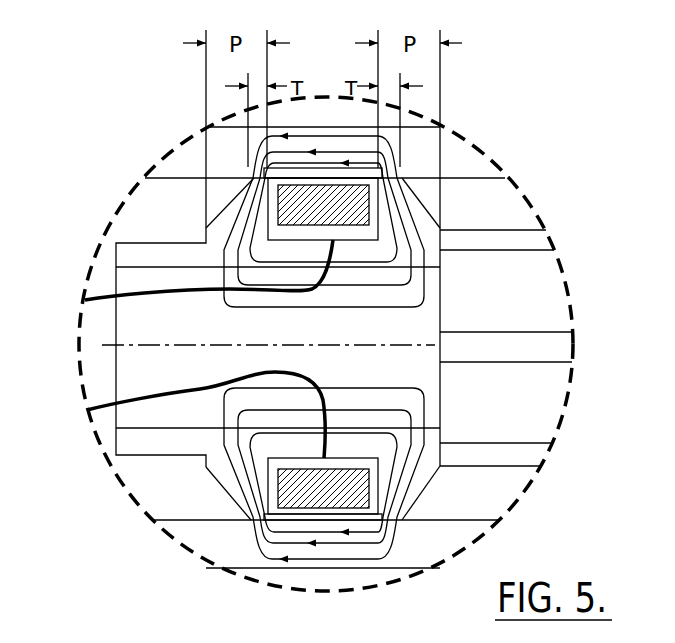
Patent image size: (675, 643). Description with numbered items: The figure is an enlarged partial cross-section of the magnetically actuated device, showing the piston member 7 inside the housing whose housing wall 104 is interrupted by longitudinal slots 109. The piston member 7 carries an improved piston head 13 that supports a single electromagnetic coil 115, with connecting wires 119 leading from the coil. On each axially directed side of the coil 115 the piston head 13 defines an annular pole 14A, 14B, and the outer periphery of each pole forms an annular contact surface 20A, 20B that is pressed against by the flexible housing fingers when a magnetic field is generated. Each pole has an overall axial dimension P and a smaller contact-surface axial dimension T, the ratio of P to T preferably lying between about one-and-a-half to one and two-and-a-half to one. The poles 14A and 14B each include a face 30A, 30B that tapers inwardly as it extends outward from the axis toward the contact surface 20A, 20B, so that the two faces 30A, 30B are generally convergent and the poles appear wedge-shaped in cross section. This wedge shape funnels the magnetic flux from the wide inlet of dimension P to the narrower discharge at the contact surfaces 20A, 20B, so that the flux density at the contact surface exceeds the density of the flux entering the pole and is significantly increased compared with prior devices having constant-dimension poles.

The piston member 7 is at (95, 508).
The piston head 13 is at (160, 493).
The annular pole 14A is at (430, 479).
The annular pole 14B is at (227, 490).
The annular contact surface 20A is at (345, 500).
The annular contact surface 20B is at (250, 521).
The face 30A is at (441, 468).
The face 30B is at (213, 477).
The housing wall 104 is at (457, 157).
The longitudinal slots 109 is at (540, 238).
The electromagnetic coil 115 is at (333, 190).
The connecting wires 119 is at (148, 290).